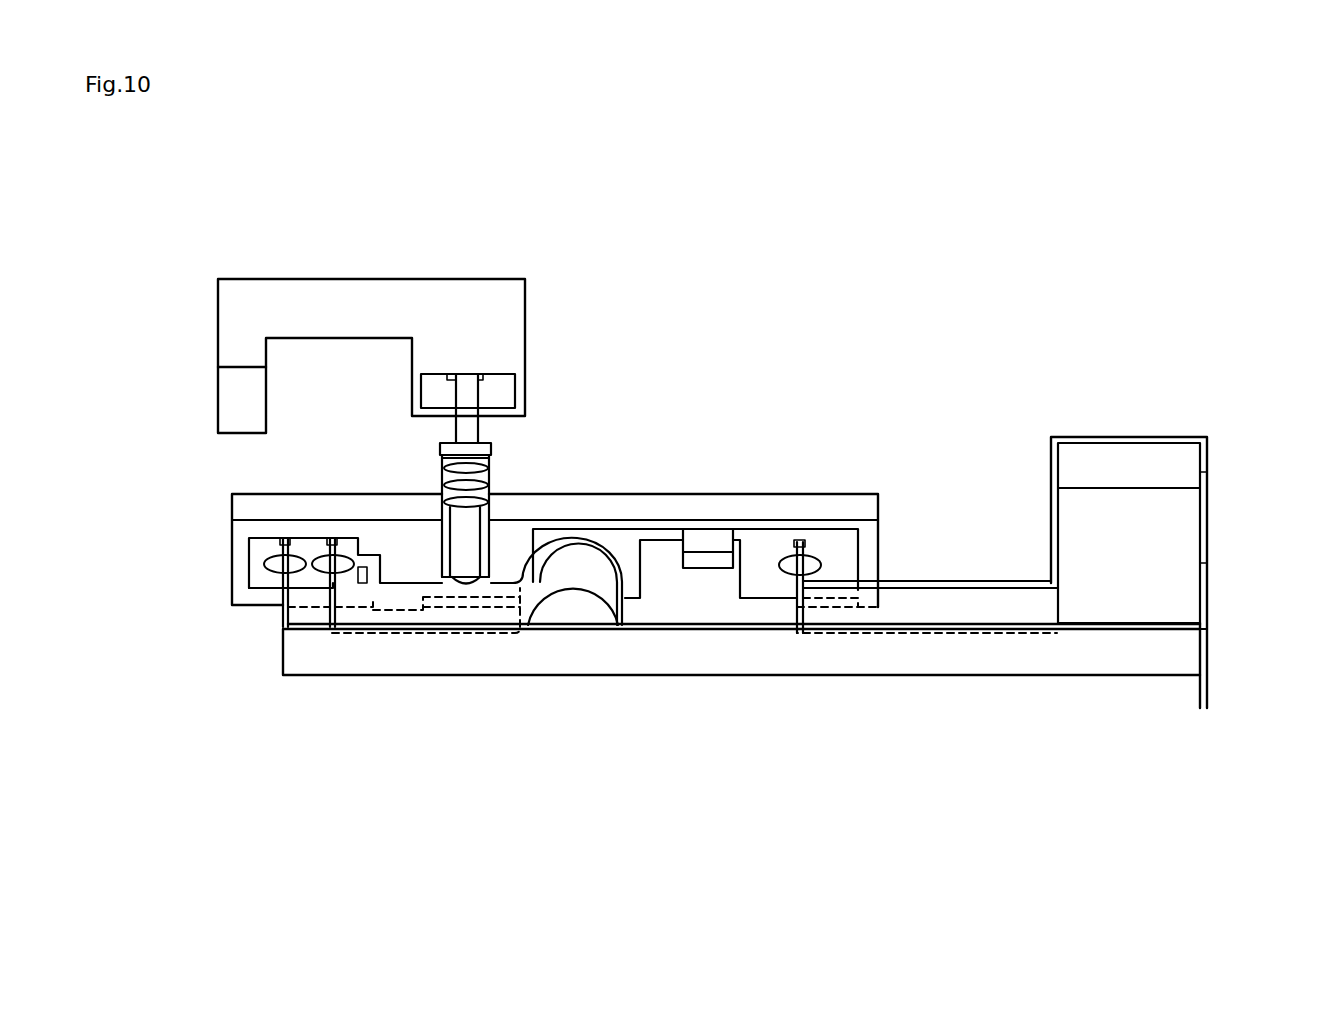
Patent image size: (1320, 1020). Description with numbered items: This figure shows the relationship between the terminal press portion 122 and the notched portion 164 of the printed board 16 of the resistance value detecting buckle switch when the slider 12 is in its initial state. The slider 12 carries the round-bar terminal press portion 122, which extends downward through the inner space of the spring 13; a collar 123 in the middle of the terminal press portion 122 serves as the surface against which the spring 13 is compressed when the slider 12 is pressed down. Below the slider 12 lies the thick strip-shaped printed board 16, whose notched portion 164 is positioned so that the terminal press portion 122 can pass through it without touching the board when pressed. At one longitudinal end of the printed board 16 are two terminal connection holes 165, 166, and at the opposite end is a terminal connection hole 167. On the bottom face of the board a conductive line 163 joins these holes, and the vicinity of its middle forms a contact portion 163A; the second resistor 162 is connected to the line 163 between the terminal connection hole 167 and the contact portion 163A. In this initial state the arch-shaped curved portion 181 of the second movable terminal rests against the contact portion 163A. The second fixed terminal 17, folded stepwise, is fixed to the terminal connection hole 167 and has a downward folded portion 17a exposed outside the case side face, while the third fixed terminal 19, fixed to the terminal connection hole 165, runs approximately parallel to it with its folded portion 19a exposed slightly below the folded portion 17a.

The slider 12 is at (393, 287).
The collar 123 is at (487, 449).
The spring 13 is at (492, 468).
The terminal press portion 122 is at (468, 580).
The printed board 16 is at (843, 495).
The notched portion 164 is at (440, 528).
The terminal connection hole 165 is at (283, 578).
The terminal connection hole 166 is at (333, 578).
The line 163 is at (850, 540).
The contact portion 163A is at (618, 543).
The second resistor 162 is at (707, 530).
The curved portion 181 is at (572, 578).
The terminal connection hole 167 is at (803, 575).
The third fixed terminal 19 is at (715, 660).
The second fixed terminal 17 is at (1058, 535).
The folded portion 17a is at (1207, 512).
The folded portion 19a is at (1207, 612).